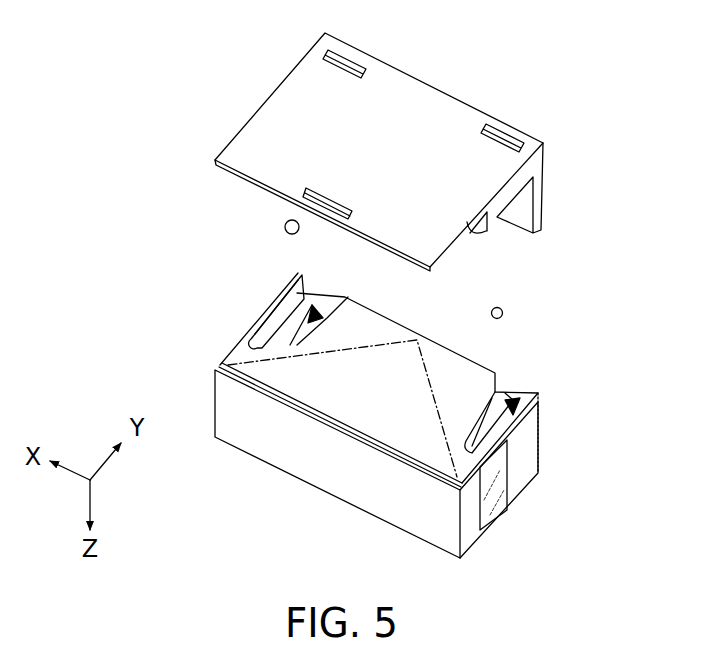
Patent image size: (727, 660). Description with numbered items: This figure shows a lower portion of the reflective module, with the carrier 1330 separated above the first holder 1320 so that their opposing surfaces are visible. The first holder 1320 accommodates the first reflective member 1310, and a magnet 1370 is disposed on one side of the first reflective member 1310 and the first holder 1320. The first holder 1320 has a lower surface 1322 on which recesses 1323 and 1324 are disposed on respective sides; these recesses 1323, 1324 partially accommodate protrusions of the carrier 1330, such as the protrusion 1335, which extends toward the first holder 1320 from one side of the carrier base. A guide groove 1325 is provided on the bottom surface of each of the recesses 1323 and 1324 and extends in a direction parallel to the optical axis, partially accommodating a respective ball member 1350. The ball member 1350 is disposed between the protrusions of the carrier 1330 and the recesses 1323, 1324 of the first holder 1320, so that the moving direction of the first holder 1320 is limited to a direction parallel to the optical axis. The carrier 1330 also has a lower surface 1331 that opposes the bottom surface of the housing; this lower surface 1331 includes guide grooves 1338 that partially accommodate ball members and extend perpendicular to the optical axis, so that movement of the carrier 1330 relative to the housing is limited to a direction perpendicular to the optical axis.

The first reflective member 1310 is at (272, 445).
The first holder 1320 is at (237, 340).
The lower surface 1322 is at (432, 350).
The recess 1323 is at (280, 296).
The recess 1324 is at (530, 369).
The guide groove 1325 is at (318, 303).
The carrier 1330 is at (388, 137).
The lower surface 1331 is at (428, 100).
The protrusion 1335 is at (515, 188).
The guide groove 1338 is at (350, 62).
The ball member 1350 is at (503, 313).
The magnet 1370 is at (498, 485).